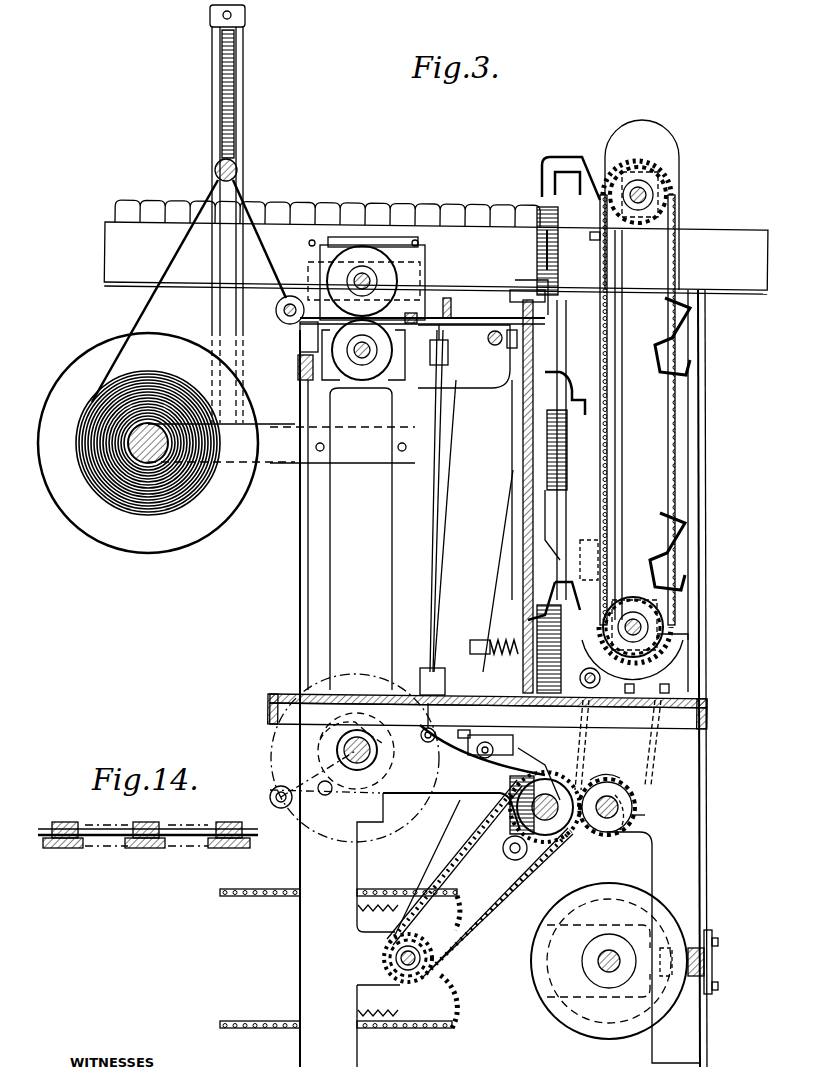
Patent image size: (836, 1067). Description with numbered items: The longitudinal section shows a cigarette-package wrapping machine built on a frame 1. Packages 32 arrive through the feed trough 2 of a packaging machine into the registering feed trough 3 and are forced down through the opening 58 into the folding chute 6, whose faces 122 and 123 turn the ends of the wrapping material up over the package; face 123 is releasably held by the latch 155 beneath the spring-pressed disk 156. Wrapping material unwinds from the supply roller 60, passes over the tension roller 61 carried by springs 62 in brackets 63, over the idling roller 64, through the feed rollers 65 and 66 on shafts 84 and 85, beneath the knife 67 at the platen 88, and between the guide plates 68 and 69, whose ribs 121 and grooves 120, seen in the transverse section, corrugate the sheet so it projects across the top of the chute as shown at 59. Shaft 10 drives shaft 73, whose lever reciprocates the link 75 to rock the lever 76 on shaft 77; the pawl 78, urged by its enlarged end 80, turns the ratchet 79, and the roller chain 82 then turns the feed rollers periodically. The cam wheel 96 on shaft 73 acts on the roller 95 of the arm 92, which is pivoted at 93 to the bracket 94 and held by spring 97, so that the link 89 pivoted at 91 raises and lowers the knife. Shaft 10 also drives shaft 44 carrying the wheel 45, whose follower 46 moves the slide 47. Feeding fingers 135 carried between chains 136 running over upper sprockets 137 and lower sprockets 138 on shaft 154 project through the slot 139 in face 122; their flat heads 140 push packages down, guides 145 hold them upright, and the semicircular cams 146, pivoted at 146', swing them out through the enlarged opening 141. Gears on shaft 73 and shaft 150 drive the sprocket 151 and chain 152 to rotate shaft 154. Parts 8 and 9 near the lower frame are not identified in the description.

In FIG. 3, the frame 1 is at (700, 787).
In FIG. 3, the feed trough 2 is at (112, 253).
In FIG. 3, the feed trough 3 is at (422, 232).
In FIG. 3, the chute 6 is at (565, 497).
In FIG. 3, the ratchet 8 is at (385, 905).
In FIG. 3, the chain 9 is at (246, 889).
In FIG. 3, the shaft 10 is at (384, 958).
In FIG. 3, the cigarette packages 32 is at (458, 212).
In FIG. 3, the shaft 44 is at (600, 958).
In FIG. 3, the wheel 45 is at (552, 1005).
In FIG. 3, the follower 46 is at (692, 992).
In FIG. 3, the slide 47 is at (698, 942).
In FIG. 3, the opening 58 is at (548, 298).
In FIG. 3, the projected wrapping material 59 is at (246, 195).
In FIG. 3, the roller 60 is at (157, 545).
In FIG. 3, the tension roller 61 is at (216, 164).
In FIG. 3, the springs 62 is at (222, 85).
In FIG. 3, the brackets 63 is at (241, 50).
In FIG. 3, the idling roller 64 is at (290, 297).
In FIG. 3, the feed roller 65 is at (300, 355).
In FIG. 3, the feed roller 66 is at (362, 262).
In FIG. 3, the knife 67 is at (447, 298).
In FIG. 3, the guide plate 68 is at (465, 312).
In FIG. 14, the guide plate 68 is at (193, 826).
In FIG. 3, the guide plate 69 is at (467, 356).
In FIG. 14, the guide plate 69 is at (185, 850).
In FIG. 3, the shaft 73 is at (550, 835).
In FIG. 3, the link 75 is at (460, 805).
In FIG. 3, the lever 76 is at (284, 785).
In FIG. 3, the shaft 77 is at (373, 752).
In FIG. 3, the pawl 78 is at (318, 795).
In FIG. 3, the ratchet 79 is at (370, 730).
In FIG. 3, the enlarged end 80 is at (345, 828).
In FIG. 3, the roller chain 82 is at (292, 605).
In FIG. 3, the shaft 84 is at (362, 385).
In FIG. 3, the shaft 85 is at (355, 272).
In FIG. 3, the platen 88 is at (441, 380).
In FIG. 3, the link 89 is at (440, 495).
In FIG. 3, the pivot 91 is at (428, 742).
In FIG. 3, the arm 92 is at (478, 750).
In FIG. 3, the pivot 93 is at (514, 745).
In FIG. 3, the bracket 94 is at (512, 720).
In FIG. 3, the follower 95 is at (547, 765).
In FIG. 3, the cam wheel 96 is at (535, 850).
In FIG. 3, the spring 97 is at (509, 808).
In FIG. 14, the grooves 120 is at (65, 848).
In FIG. 14, the ribs 121 is at (64, 822).
In FIG. 3, the face 122 is at (573, 450).
In FIG. 3, the face 123 is at (522, 522).
In FIG. 3, the feeding fingers 135 is at (565, 170).
In FIG. 3, the chains 136 is at (680, 232).
In FIG. 3, the upper sprockets 137 is at (666, 190).
In FIG. 3, the lower sprockets 138 is at (668, 616).
In FIG. 3, the slot 139 is at (568, 525).
In FIG. 3, the flat surface 140 is at (540, 205).
In FIG. 3, the enlarged opening 141 is at (584, 560).
In FIG. 3, the guides 145 is at (602, 235).
In FIG. 3, the semi-circular guides 146 is at (658, 663).
In FIG. 3, the pivotal mounting 146' is at (611, 717).
In FIG. 3, the shaft 150 is at (615, 806).
In FIG. 3, the sprocket 151 is at (630, 812).
In FIG. 3, the chain 152 is at (648, 745).
In FIG. 3, the shaft 154 is at (645, 627).
In FIG. 3, the latch 155 is at (512, 612).
In FIG. 3, the spring-pressed disk 156 is at (492, 640).